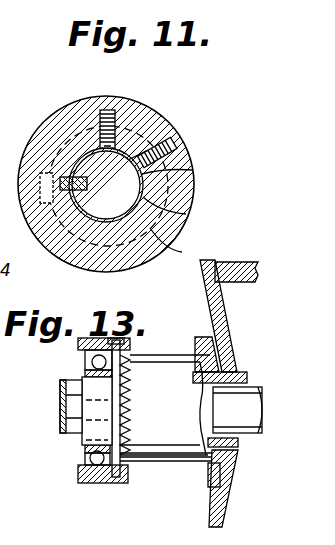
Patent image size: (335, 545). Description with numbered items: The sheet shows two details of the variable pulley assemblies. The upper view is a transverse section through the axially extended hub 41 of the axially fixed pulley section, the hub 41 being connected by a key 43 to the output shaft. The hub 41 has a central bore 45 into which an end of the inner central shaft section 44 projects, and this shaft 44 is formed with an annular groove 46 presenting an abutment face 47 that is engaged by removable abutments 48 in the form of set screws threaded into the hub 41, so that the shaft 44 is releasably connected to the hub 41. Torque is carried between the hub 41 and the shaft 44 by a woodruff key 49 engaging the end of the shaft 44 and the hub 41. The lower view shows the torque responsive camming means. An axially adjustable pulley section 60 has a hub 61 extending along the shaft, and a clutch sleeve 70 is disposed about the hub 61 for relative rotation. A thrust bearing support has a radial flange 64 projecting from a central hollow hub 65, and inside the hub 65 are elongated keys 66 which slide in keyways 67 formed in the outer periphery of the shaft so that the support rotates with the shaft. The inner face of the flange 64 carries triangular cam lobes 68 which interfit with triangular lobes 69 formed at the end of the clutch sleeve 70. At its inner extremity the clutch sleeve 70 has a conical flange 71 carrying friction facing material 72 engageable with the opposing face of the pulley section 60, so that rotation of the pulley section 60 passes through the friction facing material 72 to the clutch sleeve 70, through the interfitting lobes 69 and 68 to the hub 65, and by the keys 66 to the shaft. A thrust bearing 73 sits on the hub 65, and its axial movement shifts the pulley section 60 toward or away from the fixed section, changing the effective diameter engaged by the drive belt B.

In FIG. 11, the hub 41 is at (176, 226).
In FIG. 11, the key 43 is at (24, 240).
In FIG. 11, the inner central shaft section 44 is at (150, 147).
In FIG. 11, the central bore 45 is at (82, 160).
In FIG. 11, the annular groove 46 is at (190, 205).
In FIG. 11, the abutment face 47 is at (190, 172).
In FIG. 11, the removable abutments 48 is at (112, 117).
In FIG. 11, the woodruff key 49 is at (63, 180).
In FIG. 13, the drive belt B is at (250, 268).
In FIG. 13, the axially adjustable pulley section 60 is at (228, 480).
In FIG. 13, the hub 61 is at (205, 370).
In FIG. 13, the radial flange 64 is at (123, 344).
In FIG. 13, the central hollow hub 65 is at (82, 380).
In FIG. 13, the elongated keys 66 is at (58, 390).
In FIG. 13, the keyways 67 is at (63, 408).
In FIG. 13, the triangular cam lobes 68 is at (131, 397).
In FIG. 13, the triangular lobes 69 is at (128, 370).
In FIG. 13, the clutch sleeve 70 is at (228, 360).
In FIG. 13, the conical flange 71 is at (207, 366).
In FIG. 13, the friction facing material 72 is at (228, 355).
In FIG. 13, the thrust bearing 73 is at (85, 453).